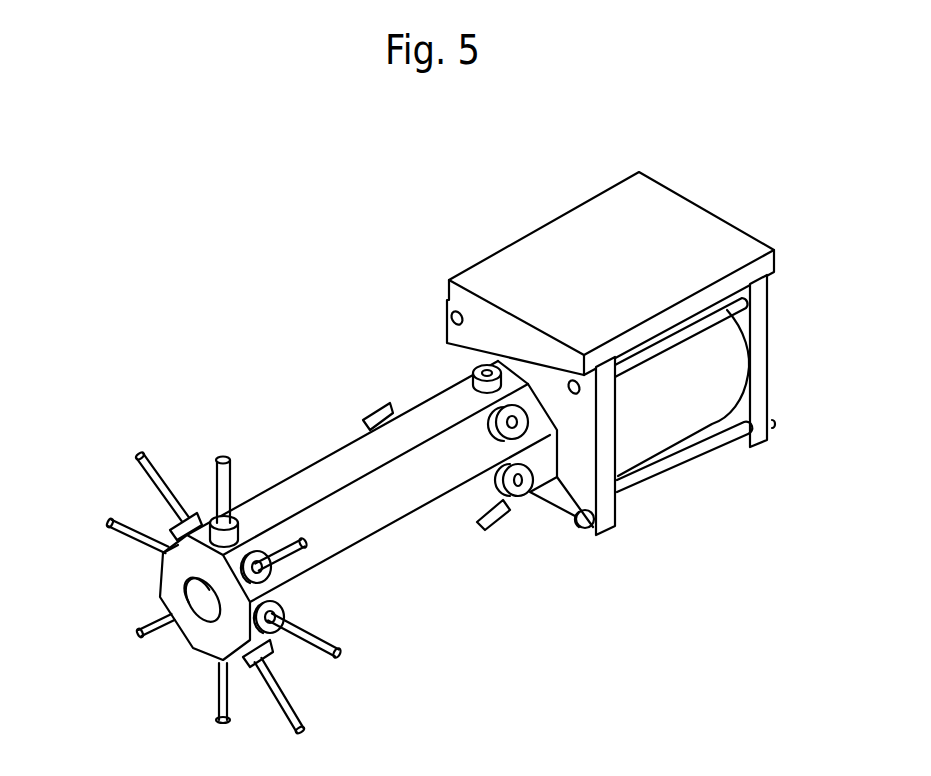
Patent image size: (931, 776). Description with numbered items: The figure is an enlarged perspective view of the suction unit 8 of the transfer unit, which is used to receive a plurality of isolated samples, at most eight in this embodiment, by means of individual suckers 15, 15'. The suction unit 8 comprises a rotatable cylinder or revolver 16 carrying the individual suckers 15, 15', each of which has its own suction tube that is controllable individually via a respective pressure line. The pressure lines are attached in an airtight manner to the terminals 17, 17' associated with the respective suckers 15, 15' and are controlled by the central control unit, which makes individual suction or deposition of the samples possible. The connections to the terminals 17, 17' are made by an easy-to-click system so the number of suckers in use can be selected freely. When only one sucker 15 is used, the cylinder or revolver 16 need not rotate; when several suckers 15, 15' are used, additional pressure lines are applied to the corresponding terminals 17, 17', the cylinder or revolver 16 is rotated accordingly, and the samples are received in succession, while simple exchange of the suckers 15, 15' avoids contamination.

The suction unit 8 is at (256, 358).
The sucker 15 is at (224, 470).
The sucker 15' is at (166, 463).
The rotatable cylinder or revolver 16 is at (386, 546).
The terminal 17 is at (454, 366).
The terminal 17' is at (368, 396).